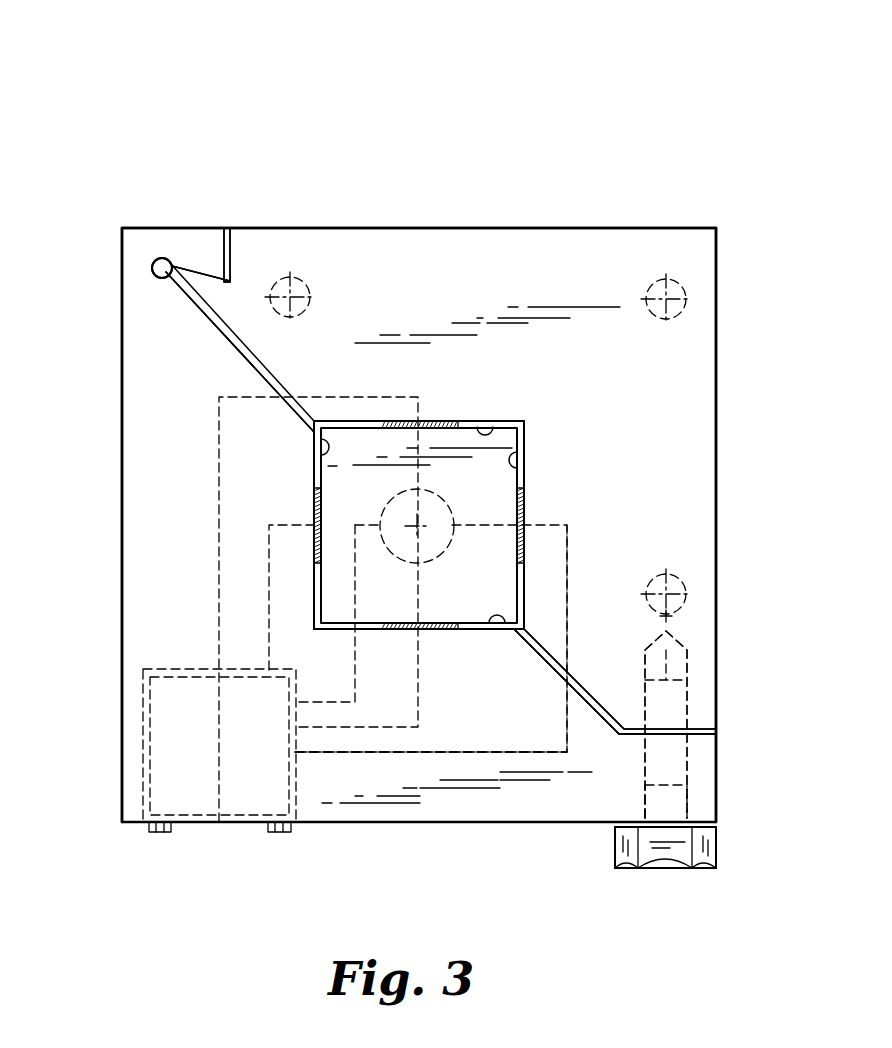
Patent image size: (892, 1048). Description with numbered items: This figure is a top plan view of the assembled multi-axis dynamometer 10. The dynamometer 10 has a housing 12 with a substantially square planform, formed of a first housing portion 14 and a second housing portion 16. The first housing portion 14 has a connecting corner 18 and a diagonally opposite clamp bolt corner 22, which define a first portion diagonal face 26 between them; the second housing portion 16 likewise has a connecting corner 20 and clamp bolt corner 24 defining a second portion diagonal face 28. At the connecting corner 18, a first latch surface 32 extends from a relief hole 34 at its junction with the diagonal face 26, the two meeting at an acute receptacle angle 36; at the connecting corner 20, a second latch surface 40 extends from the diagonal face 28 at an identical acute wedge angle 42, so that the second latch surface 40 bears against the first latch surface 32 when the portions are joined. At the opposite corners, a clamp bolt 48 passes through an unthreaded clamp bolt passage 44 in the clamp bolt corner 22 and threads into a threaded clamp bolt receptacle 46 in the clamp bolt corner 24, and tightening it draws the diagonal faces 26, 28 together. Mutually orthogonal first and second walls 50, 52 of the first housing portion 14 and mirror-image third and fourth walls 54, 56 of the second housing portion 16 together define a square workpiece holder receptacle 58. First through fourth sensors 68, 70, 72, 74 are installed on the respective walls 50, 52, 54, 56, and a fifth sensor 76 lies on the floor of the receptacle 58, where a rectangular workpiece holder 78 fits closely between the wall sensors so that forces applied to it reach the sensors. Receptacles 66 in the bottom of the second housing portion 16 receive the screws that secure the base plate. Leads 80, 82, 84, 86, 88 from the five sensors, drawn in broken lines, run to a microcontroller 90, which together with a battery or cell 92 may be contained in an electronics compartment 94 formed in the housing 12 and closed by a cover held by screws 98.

The multi-axis dynamometer 10 is at (113, 95).
The housing 12 is at (553, 216).
The first housing portion 14 is at (121, 512).
The second housing portion 16 is at (663, 228).
The connecting corner 18 is at (122, 228).
The connecting corner 20 is at (166, 258).
The clamp bolt corner 22 is at (717, 829).
The clamp bolt corner 24 is at (628, 742).
The first portion diagonal face 26 is at (290, 390).
The second portion diagonal face 28 is at (253, 358).
The first latch surface 32 is at (173, 285).
The relief hole 34 is at (155, 256).
The acute receptacle angle 36 is at (219, 286).
The second latch surface 40 is at (197, 275).
The acute wedge angle 42 is at (274, 255).
The clamp bolt passage 44 is at (643, 808).
The clamp bolt receptacle 46 is at (688, 668).
The clamp bolt 48 is at (668, 868).
The first wall 50 is at (330, 450).
The second wall 52 is at (497, 632).
The third wall 54 is at (495, 421).
The fourth wall 56 is at (525, 452).
The workpiece holder receptacle 58 is at (367, 419).
The receptacles 66 is at (312, 297).
The first sensor 68 is at (316, 503).
The second sensor 70 is at (447, 632).
The third sensor 72 is at (442, 420).
The fourth sensor 74 is at (525, 503).
The fifth sensor 76 is at (452, 540).
The workpiece holder 78 is at (420, 484).
The lead 80 is at (268, 603).
The lead 82 is at (388, 725).
The lead 84 is at (219, 550).
The lead 86 is at (512, 740).
The lead 88 is at (355, 678).
The microcontroller 90 is at (243, 823).
The battery or cell 92 is at (148, 760).
The electronics compartment 94 is at (145, 702).
The screws 98 is at (158, 832).